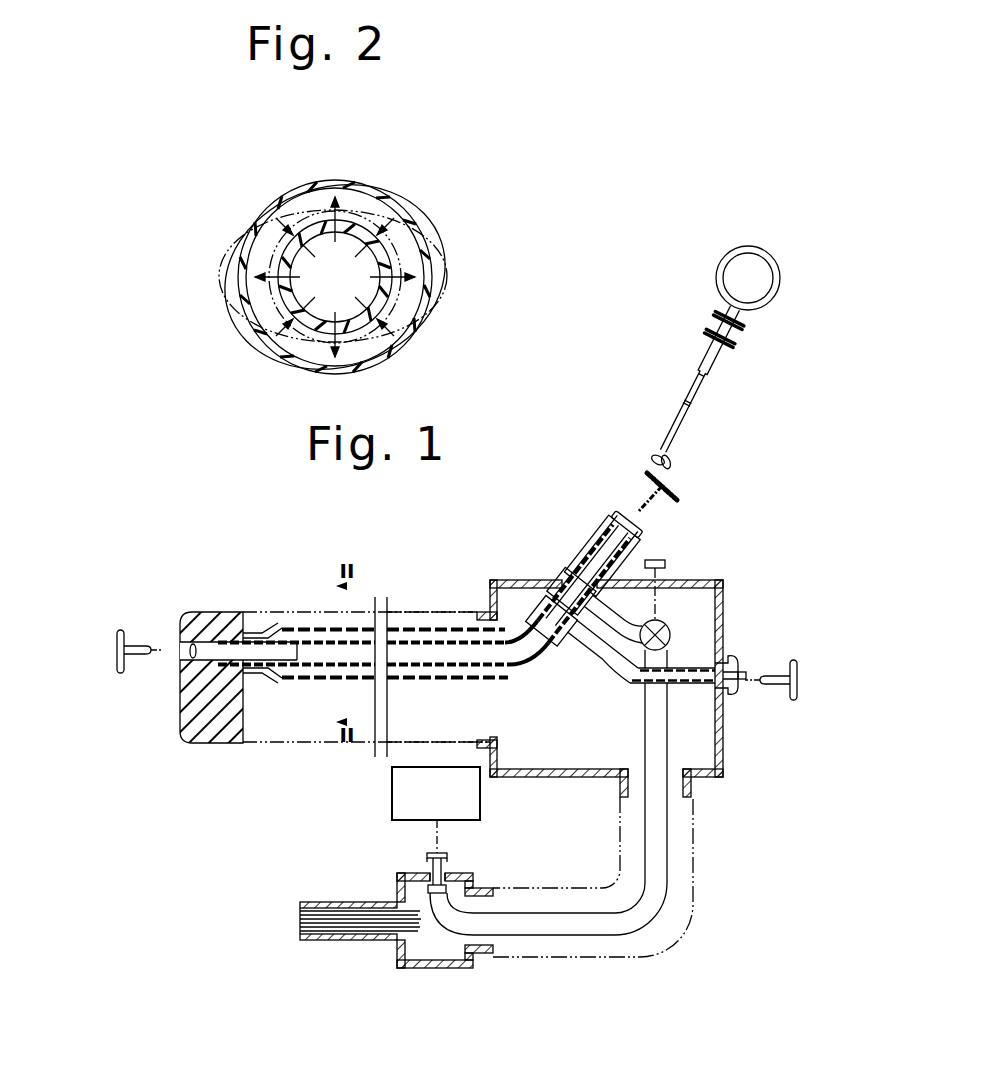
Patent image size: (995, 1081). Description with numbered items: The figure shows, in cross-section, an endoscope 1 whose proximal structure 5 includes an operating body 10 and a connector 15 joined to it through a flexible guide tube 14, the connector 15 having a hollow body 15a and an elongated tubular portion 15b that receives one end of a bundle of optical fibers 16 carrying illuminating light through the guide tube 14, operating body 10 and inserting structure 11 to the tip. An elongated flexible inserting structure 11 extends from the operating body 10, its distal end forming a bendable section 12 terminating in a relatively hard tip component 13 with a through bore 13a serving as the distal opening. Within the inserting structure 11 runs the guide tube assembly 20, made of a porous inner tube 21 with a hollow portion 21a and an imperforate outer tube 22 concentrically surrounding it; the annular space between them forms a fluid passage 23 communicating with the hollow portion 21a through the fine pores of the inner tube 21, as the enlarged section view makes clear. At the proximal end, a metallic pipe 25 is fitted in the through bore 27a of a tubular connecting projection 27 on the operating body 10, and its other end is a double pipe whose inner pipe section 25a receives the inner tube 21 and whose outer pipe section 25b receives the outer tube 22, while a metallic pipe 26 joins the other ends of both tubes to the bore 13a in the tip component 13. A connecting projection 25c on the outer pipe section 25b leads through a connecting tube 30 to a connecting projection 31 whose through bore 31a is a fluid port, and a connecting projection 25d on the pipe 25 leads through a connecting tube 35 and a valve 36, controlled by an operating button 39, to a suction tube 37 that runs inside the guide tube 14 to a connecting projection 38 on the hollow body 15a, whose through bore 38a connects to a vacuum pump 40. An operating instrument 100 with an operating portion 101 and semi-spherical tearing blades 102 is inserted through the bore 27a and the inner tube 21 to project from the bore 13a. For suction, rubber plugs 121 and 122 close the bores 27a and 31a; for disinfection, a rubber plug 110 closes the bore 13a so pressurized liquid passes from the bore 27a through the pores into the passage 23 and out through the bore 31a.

In FIG. 1, the endoscope 1 is at (330, 557).
In FIG. 1, the proximal structure 5 is at (705, 865).
In FIG. 1, the operating body 10 is at (699, 580).
In FIG. 1, the inserting structure 11 is at (425, 610).
In FIG. 1, the bendable section 12 is at (300, 611).
In FIG. 1, the tip component 13 is at (219, 611).
In FIG. 1, the through bore 13a is at (192, 643).
In FIG. 1, the guide tube 14 is at (592, 888).
In FIG. 1, the connector 15 is at (427, 972).
In FIG. 1, the hollow body 15a is at (410, 873).
In FIG. 1, the tubular portion 15b is at (331, 902).
In FIG. 1, the bundle of optical fibers 16 is at (300, 919).
In FIG. 2, the guide tube assembly 20 is at (380, 183).
In FIG. 1, the guide tube assembly 20 is at (403, 626).
In FIG. 2, the inner tube 21 is at (392, 258).
In FIG. 1, the inner tube 21 is at (305, 668).
In FIG. 2, the hollow portion 21a is at (303, 262).
In FIG. 1, the hollow portion 21a is at (410, 662).
In FIG. 2, the outer tube 22 is at (404, 226).
In FIG. 1, the outer tube 22 is at (406, 680).
In FIG. 2, the annular fluid passage 23 is at (325, 186).
In FIG. 1, the annular fluid passage 23 is at (450, 672).
In FIG. 1, the metallic pipe 25 is at (535, 603).
In FIG. 1, the inner pipe section 25a is at (545, 645).
In FIG. 1, the outer pipe section 25b is at (542, 600).
In FIG. 1, the tubular connecting projection 25c is at (578, 647).
In FIG. 1, the tubular connecting projection 25d is at (600, 652).
In FIG. 1, the metallic pipe 26 is at (276, 632).
In FIG. 1, the tubular connecting projection 27 is at (591, 548).
In FIG. 1, the through bore 27a is at (616, 520).
In FIG. 1, the connecting tube 30 is at (622, 690).
In FIG. 1, the connecting projection 31 is at (730, 660).
In FIG. 1, the through bore 31a is at (745, 675).
In FIG. 1, the connecting tube 35 is at (656, 620).
In FIG. 1, the valve 36 is at (669, 638).
In FIG. 1, the suction tube 37 is at (648, 908).
In FIG. 1, the tubular connecting projection 38 is at (446, 870).
In FIG. 1, the through bore 38a is at (444, 855).
In FIG. 1, the operating button 39 is at (657, 560).
In FIG. 1, the vacuum pump 40 is at (391, 787).
In FIG. 1, the operating instrument 100 is at (691, 354).
In FIG. 1, the operating portion 101 is at (741, 333).
In FIG. 1, the tearing blades 102 is at (656, 452).
In FIG. 1, the rubber plug 110 is at (121, 629).
In FIG. 1, the rubber plug 121 is at (684, 492).
In FIG. 1, the rubber plug 122 is at (794, 700).